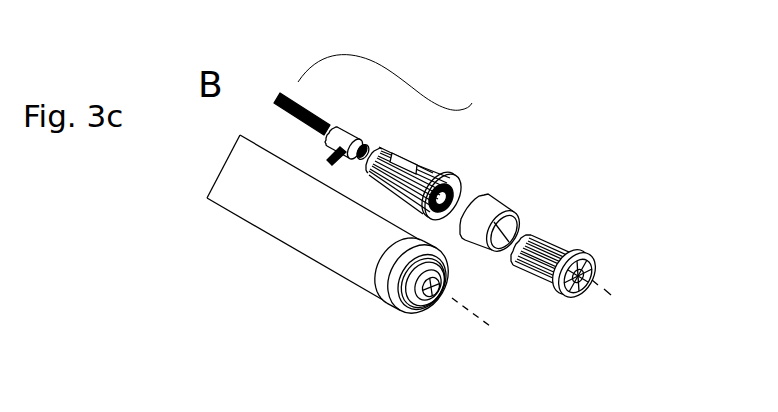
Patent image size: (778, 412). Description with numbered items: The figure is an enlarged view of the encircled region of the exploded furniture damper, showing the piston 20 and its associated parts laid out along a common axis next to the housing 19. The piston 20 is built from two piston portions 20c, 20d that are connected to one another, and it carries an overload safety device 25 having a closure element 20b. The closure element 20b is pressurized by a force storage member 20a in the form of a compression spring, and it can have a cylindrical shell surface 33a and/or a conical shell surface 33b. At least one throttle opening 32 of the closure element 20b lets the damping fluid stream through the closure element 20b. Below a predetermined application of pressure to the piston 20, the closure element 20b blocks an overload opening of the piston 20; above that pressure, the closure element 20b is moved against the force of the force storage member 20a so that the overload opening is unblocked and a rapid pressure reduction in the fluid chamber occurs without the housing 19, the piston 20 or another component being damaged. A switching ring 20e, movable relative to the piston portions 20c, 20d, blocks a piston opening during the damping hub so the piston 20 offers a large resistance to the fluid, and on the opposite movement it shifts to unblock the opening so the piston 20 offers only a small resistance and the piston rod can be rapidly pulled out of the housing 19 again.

The housing 19 is at (230, 181).
The piston 20 is at (468, 220).
The force storage member 20a is at (307, 125).
The closure element 20b is at (336, 163).
The piston portion 20c is at (395, 190).
The piston portion 20d is at (583, 288).
The switching ring 20e is at (497, 205).
The overload safety device 25 is at (278, 87).
The throttle opening 32 is at (366, 150).
The cylindrical shell surface 33a is at (343, 125).
The conical shell surface 33b is at (364, 147).